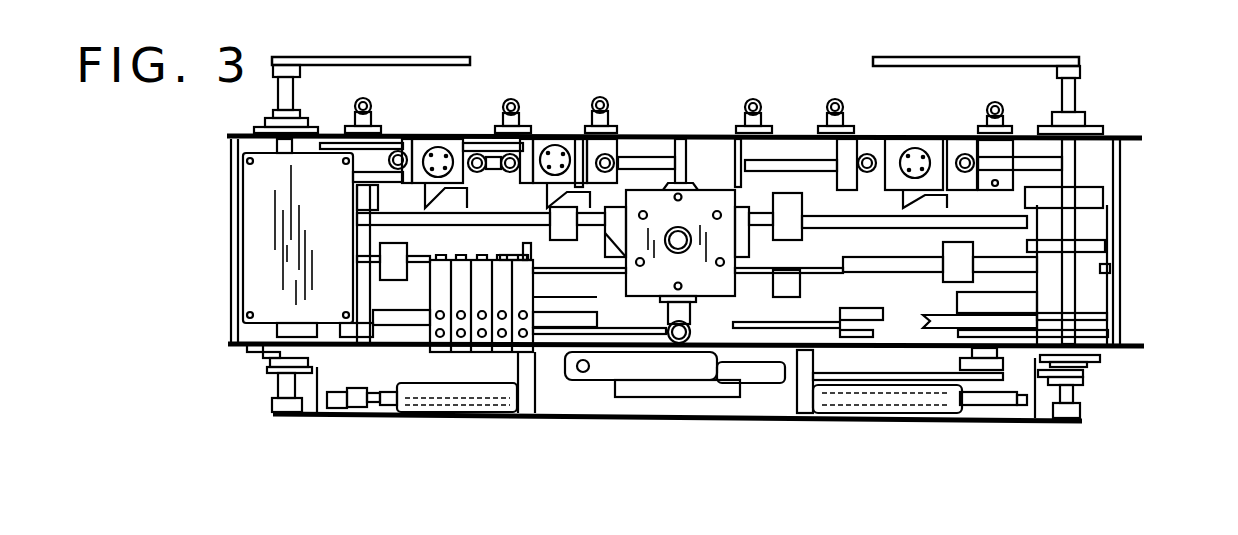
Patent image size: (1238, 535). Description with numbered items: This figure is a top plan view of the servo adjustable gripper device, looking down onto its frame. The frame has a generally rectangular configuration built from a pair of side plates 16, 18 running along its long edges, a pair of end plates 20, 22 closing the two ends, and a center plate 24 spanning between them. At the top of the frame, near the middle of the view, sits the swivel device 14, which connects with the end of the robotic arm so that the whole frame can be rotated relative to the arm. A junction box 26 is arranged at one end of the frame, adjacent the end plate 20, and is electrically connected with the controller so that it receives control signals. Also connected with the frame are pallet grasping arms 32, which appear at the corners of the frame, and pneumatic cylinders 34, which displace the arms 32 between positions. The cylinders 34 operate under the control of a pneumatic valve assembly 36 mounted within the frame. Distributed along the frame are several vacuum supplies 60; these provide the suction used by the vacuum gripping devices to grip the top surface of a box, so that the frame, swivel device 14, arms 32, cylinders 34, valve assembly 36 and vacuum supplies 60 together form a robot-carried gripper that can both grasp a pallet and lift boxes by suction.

The swivel device 14 is at (718, 280).
The side plate 16 is at (897, 344).
The side plate 18 is at (667, 134).
The end plate 20 is at (237, 303).
The end plate 22 is at (1120, 272).
The center plate 24 is at (690, 152).
The junction box 26 is at (268, 200).
The pallet grasping arms 32 is at (380, 66).
The pneumatic cylinders 34 is at (500, 400).
The pneumatic valve assembly 36 is at (451, 353).
The vacuum supplies 60 is at (434, 148).